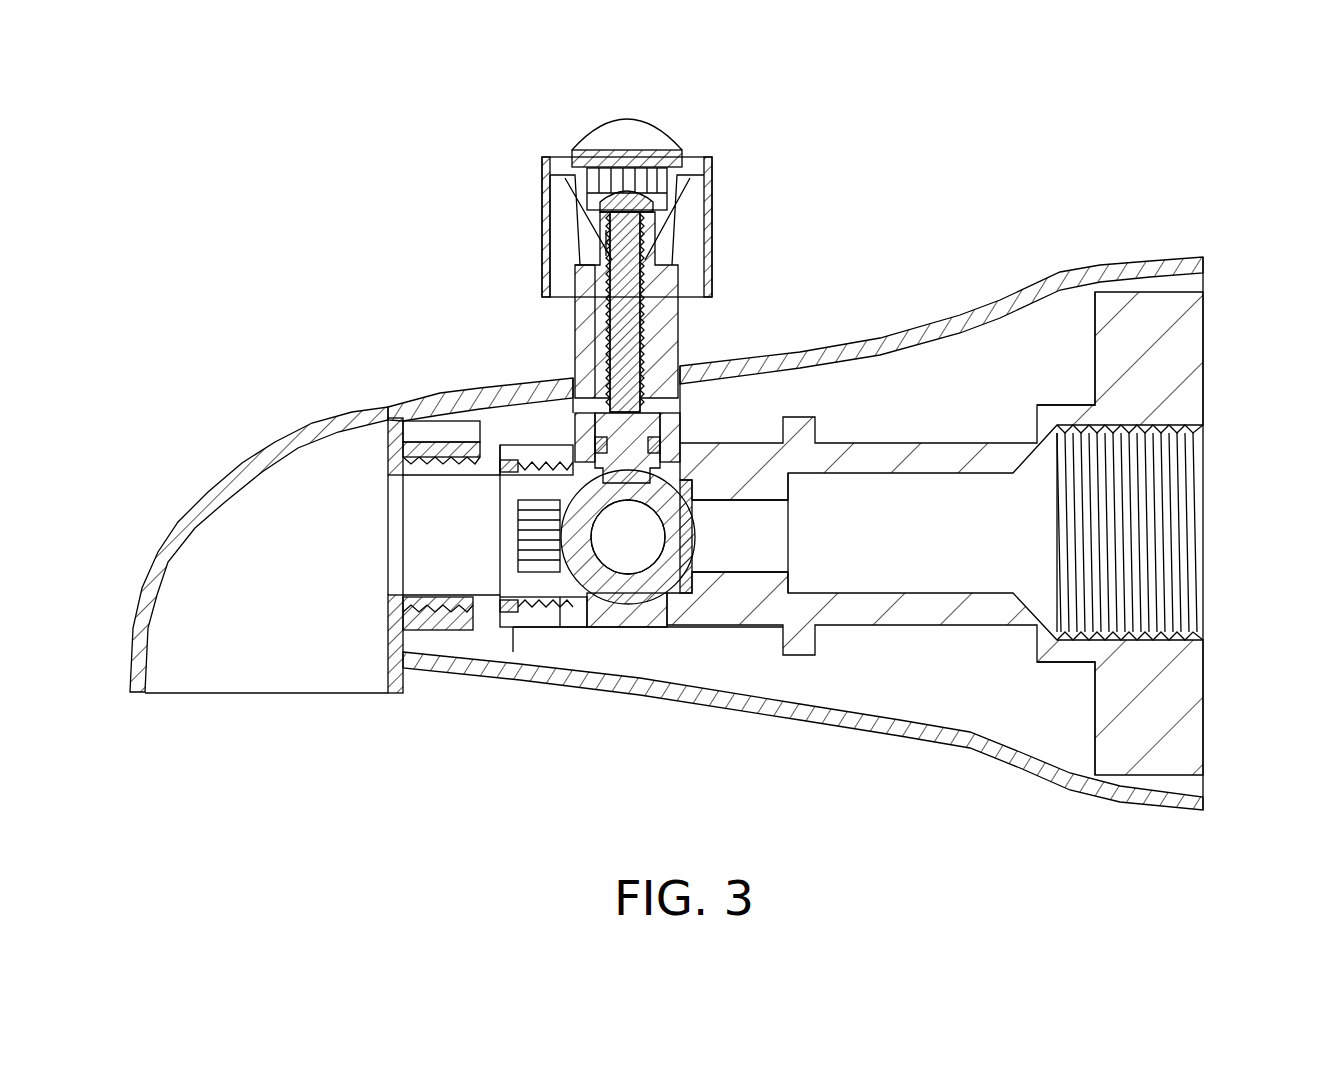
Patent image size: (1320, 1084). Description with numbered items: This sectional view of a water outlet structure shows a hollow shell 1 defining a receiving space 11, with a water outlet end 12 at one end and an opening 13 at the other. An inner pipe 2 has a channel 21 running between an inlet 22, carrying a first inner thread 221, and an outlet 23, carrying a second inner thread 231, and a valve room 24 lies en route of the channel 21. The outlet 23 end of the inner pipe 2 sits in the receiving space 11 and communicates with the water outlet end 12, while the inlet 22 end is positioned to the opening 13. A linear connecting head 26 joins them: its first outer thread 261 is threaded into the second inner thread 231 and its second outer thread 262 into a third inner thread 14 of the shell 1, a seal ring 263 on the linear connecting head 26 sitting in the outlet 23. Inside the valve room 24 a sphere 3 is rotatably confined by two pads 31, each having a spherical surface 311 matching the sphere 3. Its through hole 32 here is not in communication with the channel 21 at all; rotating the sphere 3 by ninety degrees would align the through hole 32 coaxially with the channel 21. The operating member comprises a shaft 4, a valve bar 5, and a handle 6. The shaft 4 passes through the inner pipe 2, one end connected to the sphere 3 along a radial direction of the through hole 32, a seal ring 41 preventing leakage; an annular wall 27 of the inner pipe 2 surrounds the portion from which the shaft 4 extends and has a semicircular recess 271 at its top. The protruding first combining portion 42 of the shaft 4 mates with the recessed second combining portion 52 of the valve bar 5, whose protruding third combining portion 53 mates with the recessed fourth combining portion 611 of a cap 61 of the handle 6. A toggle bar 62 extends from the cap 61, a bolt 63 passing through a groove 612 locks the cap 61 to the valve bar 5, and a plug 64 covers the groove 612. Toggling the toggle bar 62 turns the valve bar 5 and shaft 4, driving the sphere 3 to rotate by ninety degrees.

The shell 1 is at (865, 348).
The receiving space 11 is at (988, 338).
The water outlet end 12 is at (260, 682).
The opening 13 is at (1205, 268).
The third inner thread 14 is at (440, 450).
The inner pipe 2 is at (945, 628).
The channel 21 is at (852, 488).
The inlet 22 is at (1168, 517).
The first inner thread 221 is at (1175, 605).
The outlet 23 is at (465, 445).
The second inner thread 231 is at (555, 462).
The valve room 24 is at (655, 585).
The linear connecting head 26 is at (490, 612).
The first outer thread 261 is at (560, 610).
The second outer thread 262 is at (440, 622).
The seal ring 263 is at (500, 615).
The annular wall 27 is at (676, 380).
The recess 271 is at (585, 410).
The sphere 3 is at (692, 540).
The pads 31 is at (522, 550).
The spherical surface 311 is at (692, 500).
The through hole 32 is at (628, 555).
The shaft 4 is at (640, 420).
The seal ring 41 is at (670, 430).
The first combining portion 42 is at (665, 330).
The valve bar 5 is at (680, 292).
The second combining portion 52 is at (612, 375).
The third combining portion 53 is at (606, 240).
The handle 6 is at (649, 194).
The cap 61 is at (708, 245).
The fourth combining portion 611 is at (605, 256).
The groove 612 is at (660, 180).
The toggle bar 62 is at (603, 145).
The bolt 63 is at (618, 225).
The plug 64 is at (630, 156).